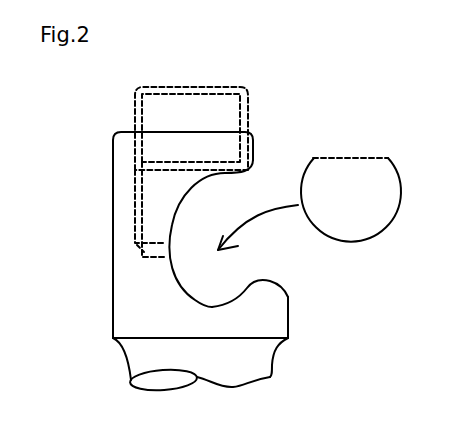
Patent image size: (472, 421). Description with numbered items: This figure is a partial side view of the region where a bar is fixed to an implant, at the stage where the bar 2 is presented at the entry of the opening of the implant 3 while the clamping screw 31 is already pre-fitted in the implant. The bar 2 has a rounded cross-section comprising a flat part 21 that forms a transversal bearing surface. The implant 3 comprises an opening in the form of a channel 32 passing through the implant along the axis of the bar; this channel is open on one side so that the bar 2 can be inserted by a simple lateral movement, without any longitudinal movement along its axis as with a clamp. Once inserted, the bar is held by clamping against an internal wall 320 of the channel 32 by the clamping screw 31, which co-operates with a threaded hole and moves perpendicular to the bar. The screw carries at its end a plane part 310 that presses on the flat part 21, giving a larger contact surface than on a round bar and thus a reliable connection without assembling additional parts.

The bar 2 is at (355, 185).
The flat part 21 is at (367, 155).
The implant 3 is at (135, 312).
The clamping screw 31 is at (202, 103).
The plane part 310 is at (193, 170).
The channel 32 is at (215, 265).
The internal wall 320 is at (222, 307).